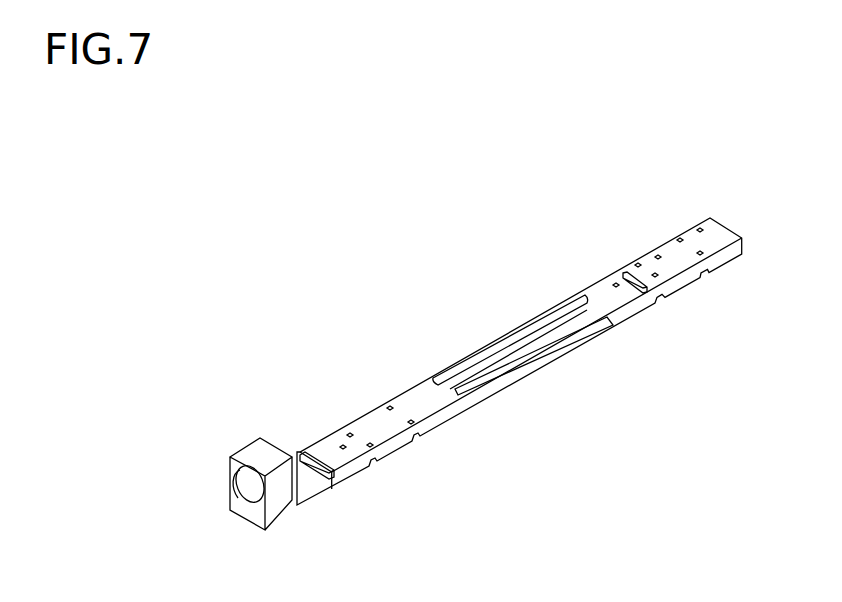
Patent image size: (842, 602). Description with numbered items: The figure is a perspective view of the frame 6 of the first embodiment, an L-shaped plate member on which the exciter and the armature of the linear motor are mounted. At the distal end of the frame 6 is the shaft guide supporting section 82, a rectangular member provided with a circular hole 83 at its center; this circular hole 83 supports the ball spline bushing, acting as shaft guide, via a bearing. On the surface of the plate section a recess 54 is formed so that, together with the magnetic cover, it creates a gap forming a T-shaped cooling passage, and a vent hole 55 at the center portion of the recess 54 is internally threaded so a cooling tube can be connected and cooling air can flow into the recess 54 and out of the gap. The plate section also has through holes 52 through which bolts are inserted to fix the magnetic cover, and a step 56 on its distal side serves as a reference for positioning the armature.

The frame 6 is at (246, 161).
The through holes 52 is at (367, 443).
The recess 54 is at (590, 320).
The vent hole 55 is at (547, 333).
The step 56 is at (312, 488).
The shaft guide supporting section 82 is at (247, 443).
The circular hole 83 is at (233, 467).